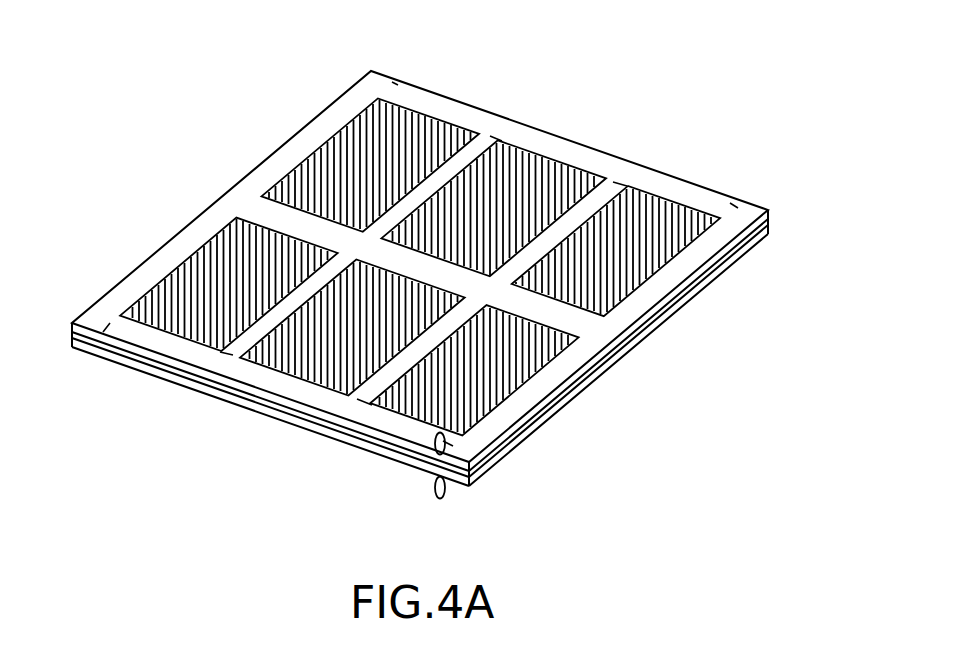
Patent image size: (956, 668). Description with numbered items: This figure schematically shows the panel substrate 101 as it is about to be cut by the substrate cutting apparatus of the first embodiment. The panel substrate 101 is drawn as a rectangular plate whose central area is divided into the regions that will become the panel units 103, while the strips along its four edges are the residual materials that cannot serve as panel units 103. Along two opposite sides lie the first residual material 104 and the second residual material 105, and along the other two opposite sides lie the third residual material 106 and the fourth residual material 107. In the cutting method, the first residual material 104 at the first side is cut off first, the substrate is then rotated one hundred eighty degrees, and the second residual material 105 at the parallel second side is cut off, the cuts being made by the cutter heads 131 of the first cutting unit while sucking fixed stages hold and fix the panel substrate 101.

The panel substrate 101 is at (599, 137).
The panel unit 103 is at (640, 232).
The first residual material 104 is at (663, 303).
The second residual material 105 is at (273, 167).
The third residual material 106 is at (178, 347).
The fourth residual material 107 is at (468, 117).
The cutter head 131 is at (448, 496).